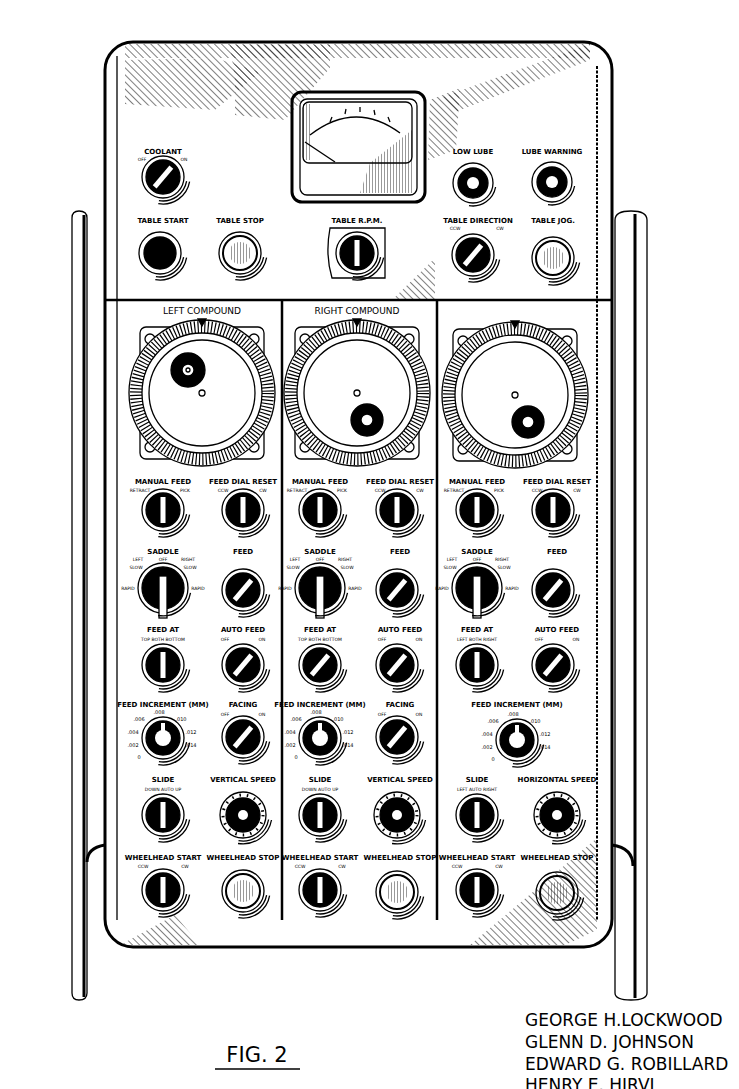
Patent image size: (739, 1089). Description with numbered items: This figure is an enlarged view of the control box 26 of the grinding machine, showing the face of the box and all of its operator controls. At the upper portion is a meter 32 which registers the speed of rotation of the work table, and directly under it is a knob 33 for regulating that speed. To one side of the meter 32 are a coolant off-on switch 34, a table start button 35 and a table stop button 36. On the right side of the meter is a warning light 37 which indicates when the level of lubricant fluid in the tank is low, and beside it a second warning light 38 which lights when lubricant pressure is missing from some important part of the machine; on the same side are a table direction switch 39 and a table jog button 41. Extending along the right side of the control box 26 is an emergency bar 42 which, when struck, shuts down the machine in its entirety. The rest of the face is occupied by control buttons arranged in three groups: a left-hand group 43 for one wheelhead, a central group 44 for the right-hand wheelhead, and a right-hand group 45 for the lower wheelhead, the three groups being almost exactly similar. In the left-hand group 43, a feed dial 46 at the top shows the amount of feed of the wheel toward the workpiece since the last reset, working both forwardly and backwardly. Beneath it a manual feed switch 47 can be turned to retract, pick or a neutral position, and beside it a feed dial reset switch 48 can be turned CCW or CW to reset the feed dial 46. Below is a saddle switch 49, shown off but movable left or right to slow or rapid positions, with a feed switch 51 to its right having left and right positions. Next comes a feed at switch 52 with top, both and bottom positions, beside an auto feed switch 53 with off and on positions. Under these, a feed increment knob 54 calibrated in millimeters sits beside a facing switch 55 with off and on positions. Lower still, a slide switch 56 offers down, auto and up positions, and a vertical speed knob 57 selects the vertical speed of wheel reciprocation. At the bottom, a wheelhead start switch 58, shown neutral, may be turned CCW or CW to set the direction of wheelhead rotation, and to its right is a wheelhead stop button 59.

The control box 26 is at (602, 56).
The meter 32 is at (418, 97).
The knob 33 is at (375, 252).
The coolant off-on switch 34 is at (150, 177).
The table start button 35 is at (152, 240).
The table stop button 36 is at (258, 250).
The warning light 37 is at (482, 172).
The warning light 38 is at (567, 175).
The table direction switch 39 is at (492, 264).
The table jog button 41 is at (570, 262).
The emergency bar 42 is at (650, 502).
The left-hand group 43 is at (127, 440).
The central group 44 is at (363, 932).
The right-hand group 45 is at (593, 752).
The feed dial 46 is at (150, 378).
The manual feed switch 47 is at (148, 512).
The feed dial reset switch 48 is at (226, 521).
The saddle switch 49 is at (142, 588).
The feed switch 51 is at (228, 605).
The feed at switch 52 is at (146, 657).
The auto feed switch 53 is at (230, 677).
The feed increment knob 54 is at (143, 735).
The facing switch 55 is at (228, 752).
The slide switch 56 is at (145, 812).
The vertical speed knob 57 is at (222, 833).
The wheelhead start switch 58 is at (157, 906).
The wheelhead stop button 59 is at (243, 909).